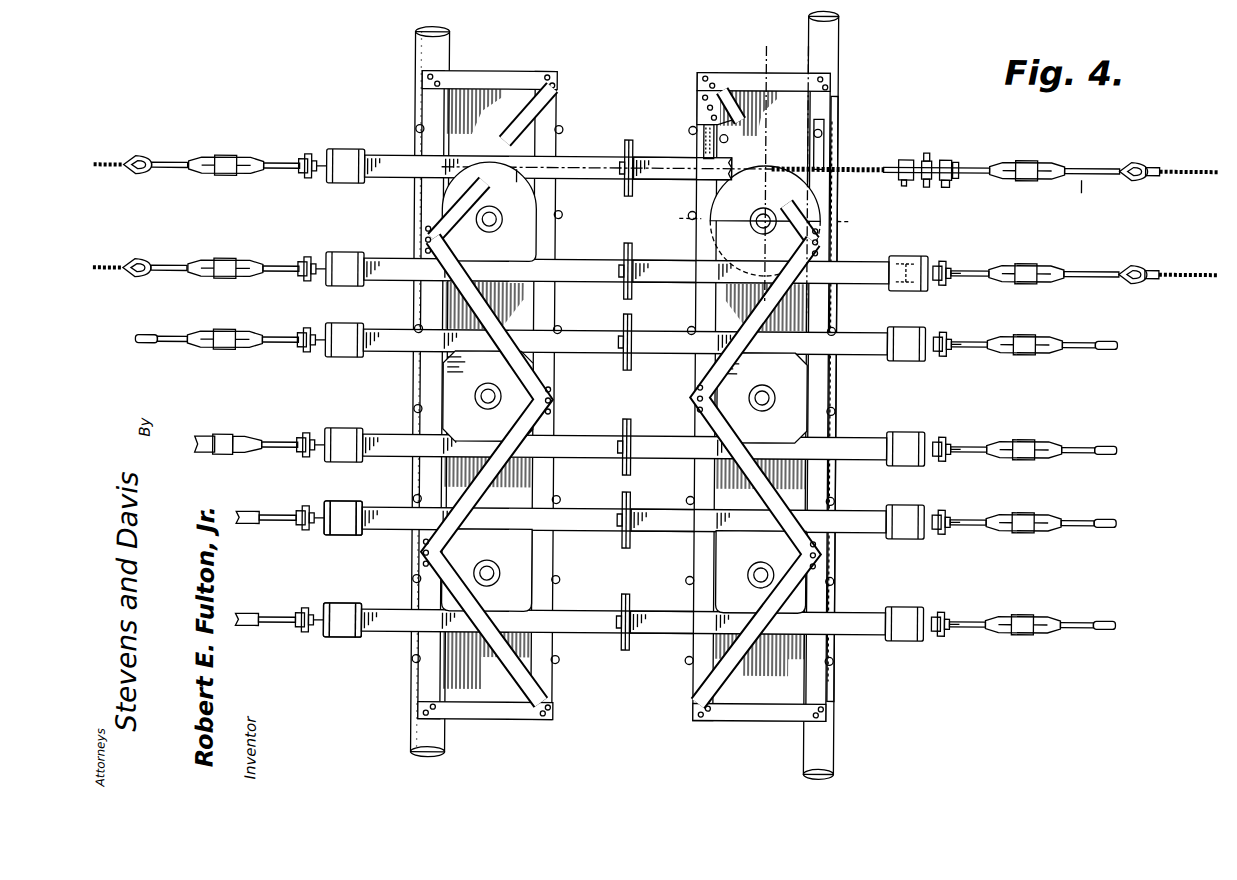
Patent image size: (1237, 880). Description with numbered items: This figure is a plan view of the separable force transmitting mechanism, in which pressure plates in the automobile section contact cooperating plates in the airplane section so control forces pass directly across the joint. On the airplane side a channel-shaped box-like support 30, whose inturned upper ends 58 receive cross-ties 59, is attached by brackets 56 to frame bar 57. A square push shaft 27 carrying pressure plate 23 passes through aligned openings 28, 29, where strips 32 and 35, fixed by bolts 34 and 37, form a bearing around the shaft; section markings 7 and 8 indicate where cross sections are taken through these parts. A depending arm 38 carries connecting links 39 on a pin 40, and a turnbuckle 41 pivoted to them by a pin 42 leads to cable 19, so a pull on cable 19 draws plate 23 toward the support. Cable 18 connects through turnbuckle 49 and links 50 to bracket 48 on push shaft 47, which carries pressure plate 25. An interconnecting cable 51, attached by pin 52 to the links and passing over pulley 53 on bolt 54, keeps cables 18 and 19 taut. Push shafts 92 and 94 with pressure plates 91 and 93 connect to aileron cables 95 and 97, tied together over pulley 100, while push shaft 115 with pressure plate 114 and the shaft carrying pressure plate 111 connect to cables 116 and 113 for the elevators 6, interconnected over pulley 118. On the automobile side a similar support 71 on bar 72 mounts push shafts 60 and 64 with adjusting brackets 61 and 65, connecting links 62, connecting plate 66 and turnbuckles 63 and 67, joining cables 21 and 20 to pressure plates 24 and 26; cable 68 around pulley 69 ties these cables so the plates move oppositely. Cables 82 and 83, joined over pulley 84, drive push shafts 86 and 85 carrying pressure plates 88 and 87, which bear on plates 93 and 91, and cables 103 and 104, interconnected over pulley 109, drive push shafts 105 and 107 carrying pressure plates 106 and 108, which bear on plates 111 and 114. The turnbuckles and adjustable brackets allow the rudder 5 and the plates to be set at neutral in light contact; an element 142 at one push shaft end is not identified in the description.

The rudder 5 is at (518, 174).
The elevators 6 is at (681, 222).
The section line 7- 7 is at (759, 53).
The section line 8- 8 is at (803, 53).
The cable 18 is at (1172, 277).
The cable 19 is at (1162, 172).
The cable 20 is at (125, 265).
The cable 21 is at (125, 162).
The pressure plate 23 is at (632, 145).
The pressure plate 24 is at (620, 148).
The pressure plate 25 is at (632, 250).
The pressure plate 26 is at (620, 252).
The square push shaft 27 is at (668, 158).
The opening 28 is at (690, 182).
The opening 29 is at (836, 152).
The box-like support 30 is at (710, 72).
The strip 32 is at (714, 150).
The bolts 34 is at (727, 138).
The strip 35 is at (812, 146).
The bolts 37 is at (812, 132).
The depending arm 38 is at (926, 185).
The connecting links 39 is at (957, 160).
The pin 40 is at (925, 151).
The turnbuckle 41 is at (1040, 160).
The pin 42 is at (944, 156).
The square push shaft 47 is at (660, 283).
The bracket 48 is at (915, 255).
The turnbuckle 49 is at (1040, 266).
The links 50 is at (948, 265).
The cable 51 is at (856, 168).
The pin 52 is at (903, 156).
The pulley 53 is at (755, 175).
The bolt 54 is at (760, 212).
The bracket 56 is at (830, 215).
The frame bar 57 is at (834, 745).
The upper ends 58 is at (708, 108).
The cross-ties 59 is at (735, 115).
The push shaft 60 is at (575, 172).
The adjusting bracket 61 is at (345, 152).
The connecting links 62 is at (303, 158).
The turnbuckle 63 is at (235, 160).
The push shaft 64 is at (585, 283).
The adjusting bracket 65 is at (345, 255).
The connecting plate 66 is at (300, 262).
The turnbuckle 67 is at (225, 262).
The cable 68 is at (455, 170).
The pulley 69 is at (483, 170).
The box-like support 71 is at (527, 70).
The bar 72 is at (444, 747).
The cable 82 is at (248, 618).
The cable 83 is at (248, 515).
The pulley 84 is at (535, 560).
The push shaft 85 is at (378, 510).
The push shaft 86 is at (378, 615).
The pressure plate 87 is at (620, 506).
The pressure plate 88 is at (620, 610).
The pressure plate 91 is at (632, 505).
The push shaft 92 is at (655, 532).
The pressure plate 93 is at (632, 612).
The push shaft 94 is at (648, 640).
The cable 95 is at (1115, 518).
The cable 97 is at (1092, 618).
The pulley 100 is at (735, 530).
The cable 103 is at (143, 338).
The cable 104 is at (205, 440).
The push shaft 105 is at (370, 340).
The pressure plate 106 is at (620, 330).
The push shaft 107 is at (380, 440).
The pressure plate 108 is at (620, 433).
The pulley 109 is at (470, 355).
The pressure plate 111 is at (632, 330).
The cable 113 is at (1090, 340).
The pressure plate 114 is at (632, 435).
The push shaft 115 is at (890, 440).
The cable 116 is at (1090, 444).
The pulley 118 is at (780, 440).
The block 142 is at (890, 338).